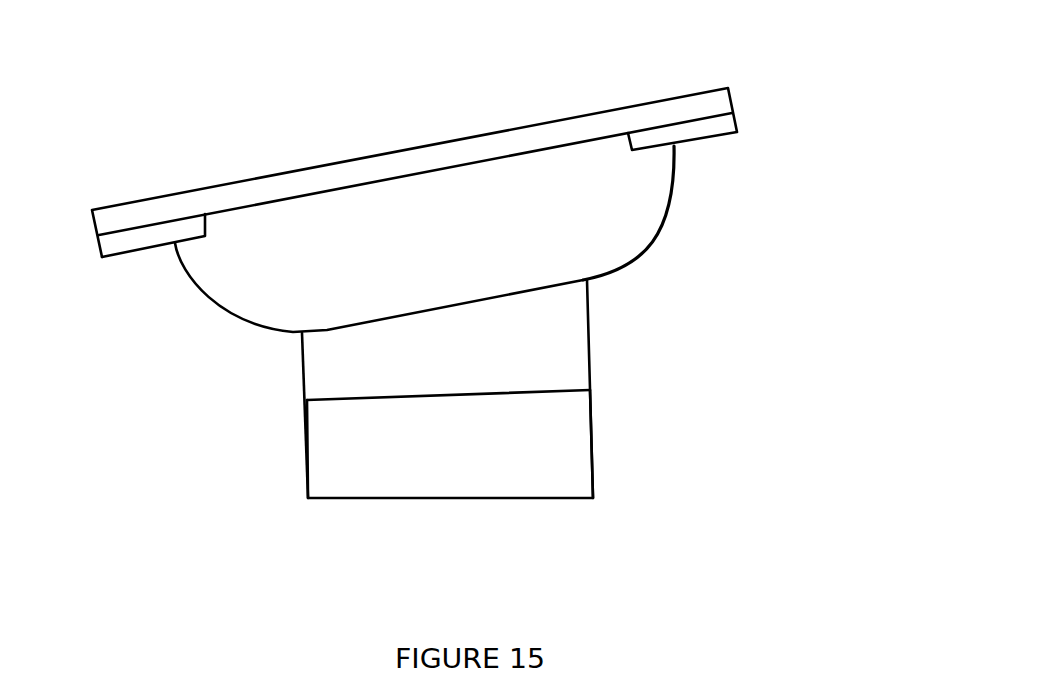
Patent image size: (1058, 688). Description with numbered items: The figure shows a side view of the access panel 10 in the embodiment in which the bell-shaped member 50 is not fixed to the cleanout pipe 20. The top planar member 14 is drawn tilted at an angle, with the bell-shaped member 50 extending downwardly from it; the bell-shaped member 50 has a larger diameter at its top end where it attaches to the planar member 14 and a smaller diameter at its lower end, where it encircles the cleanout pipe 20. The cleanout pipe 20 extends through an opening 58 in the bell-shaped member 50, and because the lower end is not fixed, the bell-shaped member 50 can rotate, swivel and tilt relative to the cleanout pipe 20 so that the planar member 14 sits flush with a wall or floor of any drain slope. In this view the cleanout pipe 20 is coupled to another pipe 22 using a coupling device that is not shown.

The access panel 10 is at (832, 88).
The planar member 14 is at (683, 108).
The bell-shaped member 50 is at (250, 237).
The cleanout pipe 20 is at (530, 373).
The pipe 22 is at (535, 490).
The opening 58 is at (332, 333).